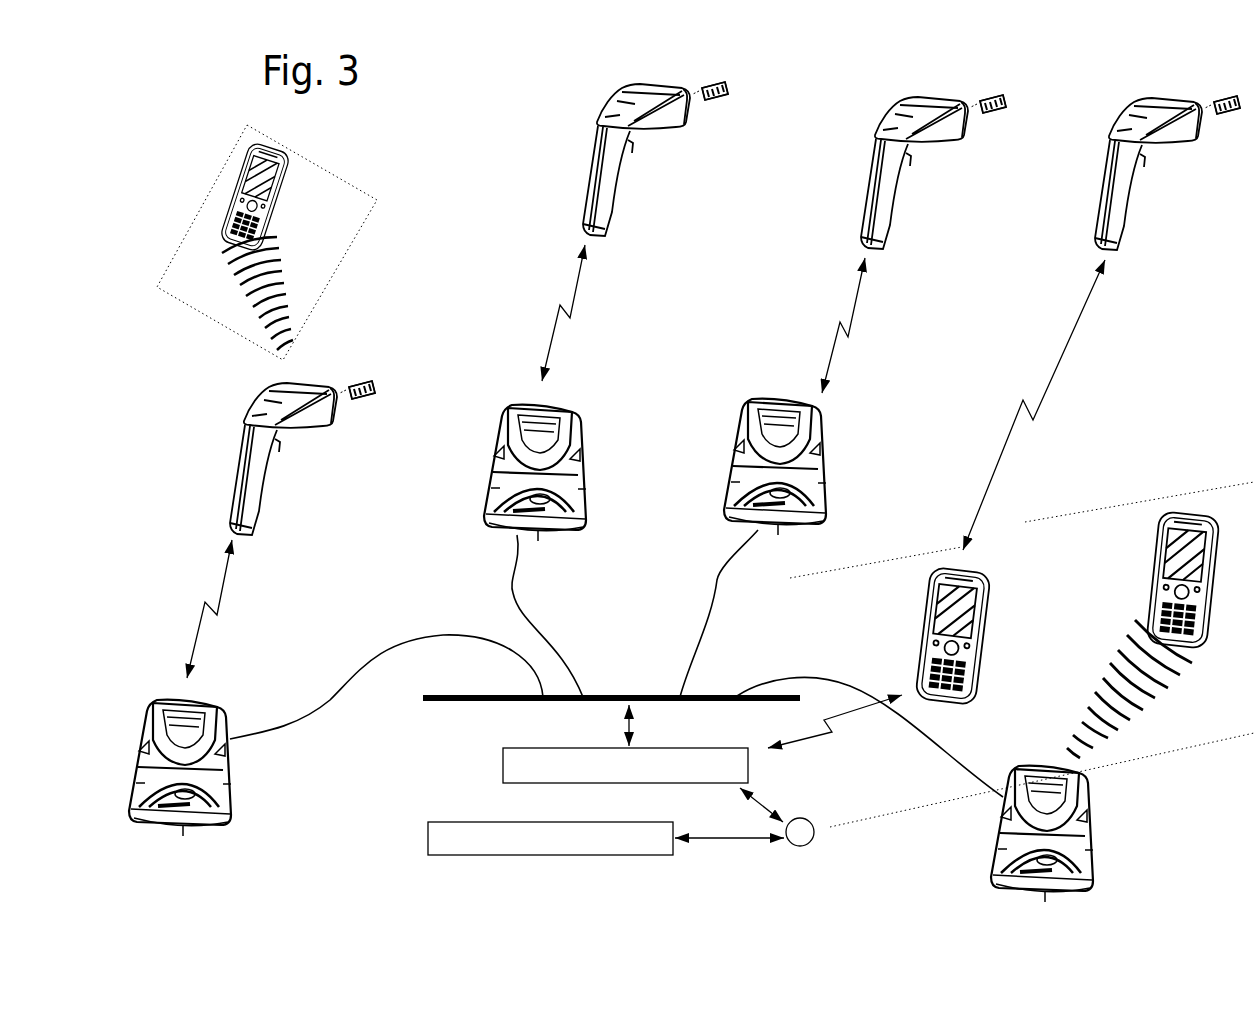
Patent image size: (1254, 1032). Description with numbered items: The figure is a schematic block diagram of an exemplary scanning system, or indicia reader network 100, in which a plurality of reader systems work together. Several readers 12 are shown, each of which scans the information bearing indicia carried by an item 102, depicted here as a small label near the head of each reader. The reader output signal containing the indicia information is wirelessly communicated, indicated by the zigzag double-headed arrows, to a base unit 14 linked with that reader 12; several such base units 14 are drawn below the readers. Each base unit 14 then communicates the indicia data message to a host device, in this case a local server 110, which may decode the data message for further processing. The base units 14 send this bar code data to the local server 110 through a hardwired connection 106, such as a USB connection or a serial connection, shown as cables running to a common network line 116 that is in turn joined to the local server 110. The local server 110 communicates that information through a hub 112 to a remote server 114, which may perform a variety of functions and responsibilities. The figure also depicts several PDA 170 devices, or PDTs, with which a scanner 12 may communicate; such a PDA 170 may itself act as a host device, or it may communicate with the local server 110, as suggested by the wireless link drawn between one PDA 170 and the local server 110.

The indicia reader network 100 is at (484, 106).
The reader 12 is at (657, 125).
The item 102 is at (728, 87).
The base unit 14 is at (586, 444).
The PDA 170 is at (283, 176).
The network bus 116 is at (435, 701).
The hardwired connection 106 is at (720, 582).
The local server 110 is at (748, 762).
The remote server 114 is at (428, 853).
The hub 112 is at (814, 832).